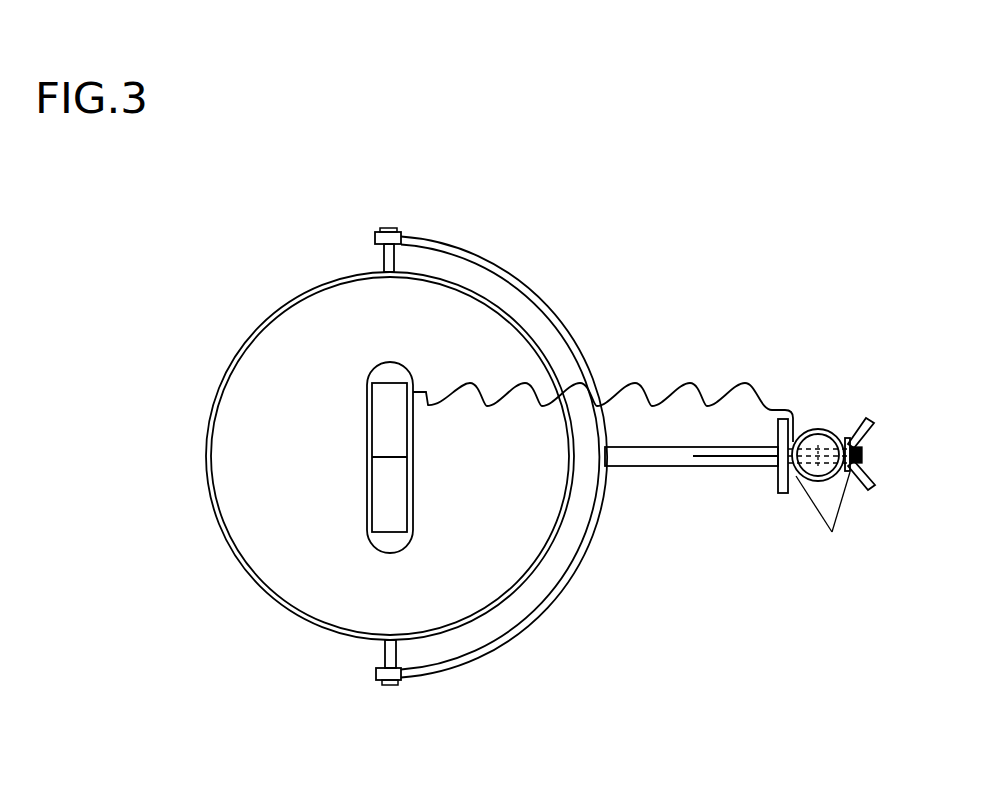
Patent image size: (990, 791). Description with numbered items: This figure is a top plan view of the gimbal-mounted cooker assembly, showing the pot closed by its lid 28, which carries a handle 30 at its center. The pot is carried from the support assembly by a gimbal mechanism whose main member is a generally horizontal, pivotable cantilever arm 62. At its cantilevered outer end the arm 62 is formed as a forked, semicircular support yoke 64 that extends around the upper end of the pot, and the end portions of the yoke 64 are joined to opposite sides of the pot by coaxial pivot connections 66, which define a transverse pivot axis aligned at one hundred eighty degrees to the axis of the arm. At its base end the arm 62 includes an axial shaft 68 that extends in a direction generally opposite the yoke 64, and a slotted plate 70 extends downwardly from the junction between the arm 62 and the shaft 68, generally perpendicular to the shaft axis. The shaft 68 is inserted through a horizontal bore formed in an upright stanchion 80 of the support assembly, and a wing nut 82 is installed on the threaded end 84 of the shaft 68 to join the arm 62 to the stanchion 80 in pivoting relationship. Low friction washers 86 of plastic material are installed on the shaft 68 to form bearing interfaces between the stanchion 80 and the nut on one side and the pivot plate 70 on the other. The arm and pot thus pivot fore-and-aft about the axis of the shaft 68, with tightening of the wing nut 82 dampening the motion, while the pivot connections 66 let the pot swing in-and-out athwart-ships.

The lid 28 is at (272, 522).
The handle 30 is at (387, 430).
The cantilever arm 62 is at (645, 458).
The support yoke 64 is at (526, 618).
The pivot connections 66 is at (384, 660).
The axial shaft 68 is at (812, 445).
The slotted plate 70 is at (781, 495).
The upright stanchion 80 is at (823, 430).
The wing nut 82 is at (876, 420).
The threaded end 84 is at (866, 455).
The low friction washers 86 is at (823, 522).